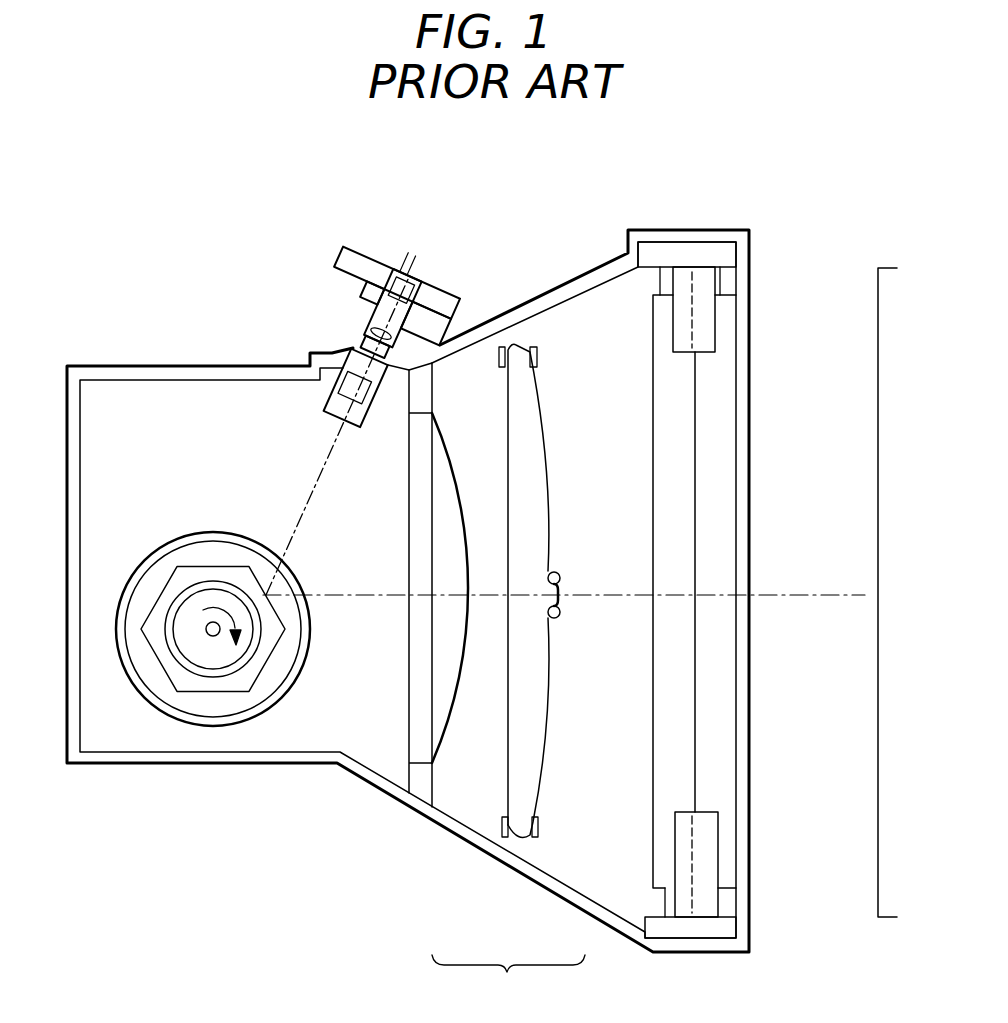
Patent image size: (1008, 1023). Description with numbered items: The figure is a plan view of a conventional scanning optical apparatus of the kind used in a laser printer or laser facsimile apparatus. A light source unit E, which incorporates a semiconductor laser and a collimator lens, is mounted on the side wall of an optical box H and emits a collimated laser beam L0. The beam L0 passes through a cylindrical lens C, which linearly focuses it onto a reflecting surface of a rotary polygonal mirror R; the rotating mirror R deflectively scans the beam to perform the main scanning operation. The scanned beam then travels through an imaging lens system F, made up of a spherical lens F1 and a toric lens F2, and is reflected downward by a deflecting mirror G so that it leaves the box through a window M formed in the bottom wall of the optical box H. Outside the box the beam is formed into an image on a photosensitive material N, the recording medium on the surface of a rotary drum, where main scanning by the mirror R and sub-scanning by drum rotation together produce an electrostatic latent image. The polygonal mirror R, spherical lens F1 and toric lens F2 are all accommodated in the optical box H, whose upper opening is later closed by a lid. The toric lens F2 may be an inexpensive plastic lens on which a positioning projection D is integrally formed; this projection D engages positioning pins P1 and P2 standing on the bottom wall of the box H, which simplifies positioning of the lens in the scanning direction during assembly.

The light source unit E is at (366, 242).
The deflecting mirror G is at (707, 264).
The optical box H is at (222, 366).
The window M is at (657, 357).
The cylindrical lens C is at (338, 387).
The laser beam L0 is at (313, 485).
The positioning pin P1 is at (559, 573).
The positioning projection D is at (563, 590).
The positioning pin P2 is at (562, 614).
The rotary polygonal mirror R is at (272, 680).
The photosensitive material N is at (875, 882).
The spherical lens F1 is at (447, 745).
The toric lens F2 is at (573, 785).
The imaging lens system F is at (508, 979).